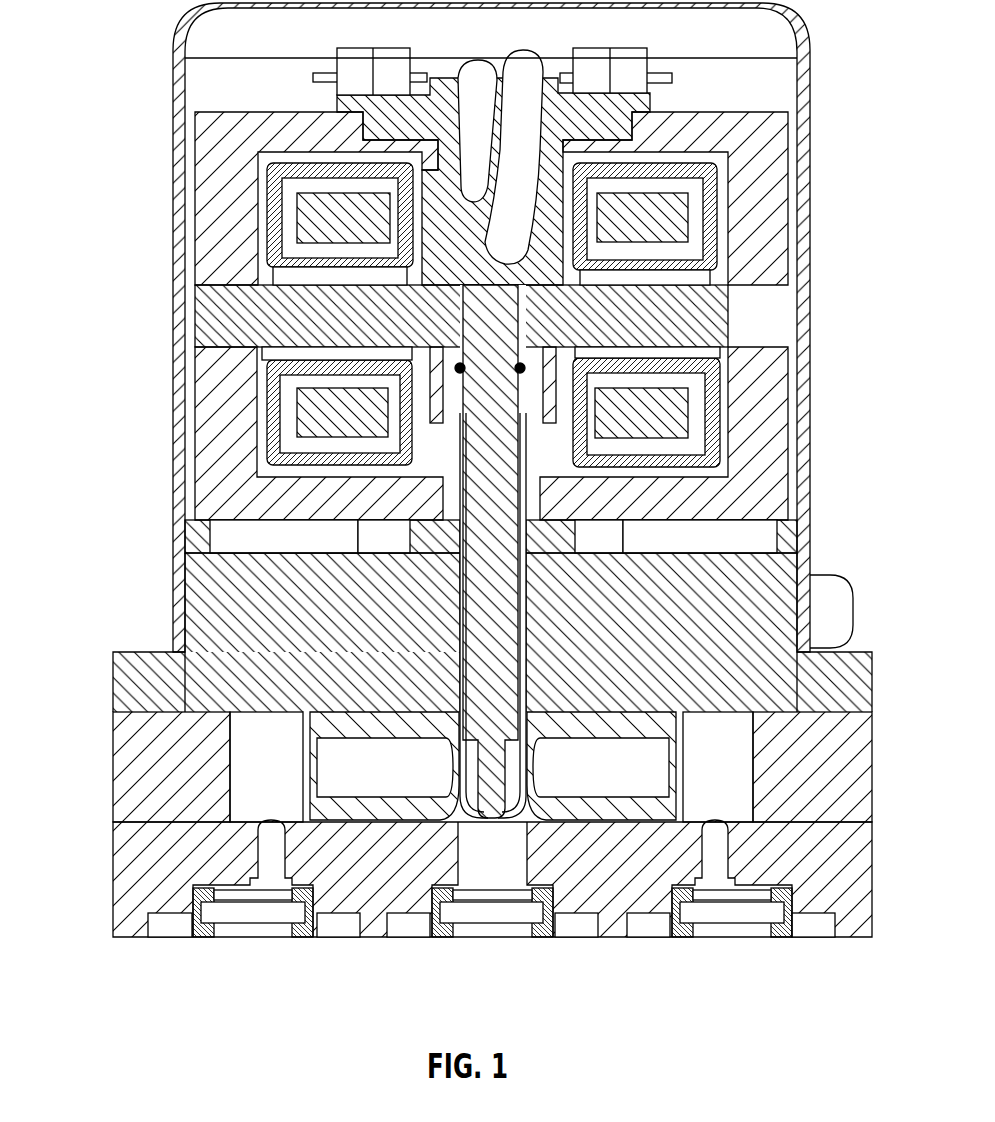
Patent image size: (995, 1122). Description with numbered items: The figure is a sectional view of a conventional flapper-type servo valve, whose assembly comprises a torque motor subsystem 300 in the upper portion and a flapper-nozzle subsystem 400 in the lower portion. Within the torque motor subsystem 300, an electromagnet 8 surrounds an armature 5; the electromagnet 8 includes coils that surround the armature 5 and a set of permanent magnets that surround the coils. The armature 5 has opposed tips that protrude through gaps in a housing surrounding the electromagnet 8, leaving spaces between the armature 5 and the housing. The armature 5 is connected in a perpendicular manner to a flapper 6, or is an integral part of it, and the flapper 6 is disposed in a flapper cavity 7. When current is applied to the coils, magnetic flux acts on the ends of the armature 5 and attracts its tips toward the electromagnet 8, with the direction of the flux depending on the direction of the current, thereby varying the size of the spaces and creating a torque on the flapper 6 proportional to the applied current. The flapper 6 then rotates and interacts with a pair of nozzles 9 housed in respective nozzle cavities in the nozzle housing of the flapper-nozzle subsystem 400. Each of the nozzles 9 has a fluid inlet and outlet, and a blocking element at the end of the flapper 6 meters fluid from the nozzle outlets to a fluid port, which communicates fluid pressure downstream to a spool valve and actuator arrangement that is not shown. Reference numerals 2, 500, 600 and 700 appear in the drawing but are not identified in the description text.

The torque motor subsystem 300 is at (477, 452).
The flapper-nozzle subsystem 400 is at (98, 885).
The coil 2 is at (650, 757).
The armature 5 is at (706, 309).
The flapper 6 is at (717, 473).
The flapper cavity 7 is at (492, 609).
The electromagnet 8 is at (660, 218).
The nozzles 9 is at (455, 770).
The sensor 500 is at (493, 912).
The sensor 600 is at (256, 912).
The sensor 700 is at (730, 912).